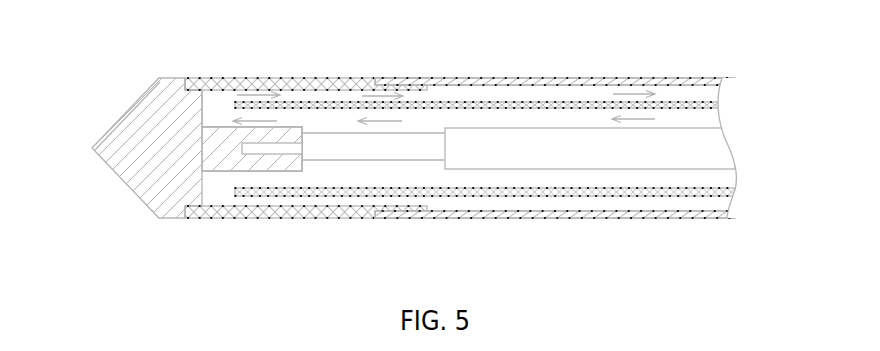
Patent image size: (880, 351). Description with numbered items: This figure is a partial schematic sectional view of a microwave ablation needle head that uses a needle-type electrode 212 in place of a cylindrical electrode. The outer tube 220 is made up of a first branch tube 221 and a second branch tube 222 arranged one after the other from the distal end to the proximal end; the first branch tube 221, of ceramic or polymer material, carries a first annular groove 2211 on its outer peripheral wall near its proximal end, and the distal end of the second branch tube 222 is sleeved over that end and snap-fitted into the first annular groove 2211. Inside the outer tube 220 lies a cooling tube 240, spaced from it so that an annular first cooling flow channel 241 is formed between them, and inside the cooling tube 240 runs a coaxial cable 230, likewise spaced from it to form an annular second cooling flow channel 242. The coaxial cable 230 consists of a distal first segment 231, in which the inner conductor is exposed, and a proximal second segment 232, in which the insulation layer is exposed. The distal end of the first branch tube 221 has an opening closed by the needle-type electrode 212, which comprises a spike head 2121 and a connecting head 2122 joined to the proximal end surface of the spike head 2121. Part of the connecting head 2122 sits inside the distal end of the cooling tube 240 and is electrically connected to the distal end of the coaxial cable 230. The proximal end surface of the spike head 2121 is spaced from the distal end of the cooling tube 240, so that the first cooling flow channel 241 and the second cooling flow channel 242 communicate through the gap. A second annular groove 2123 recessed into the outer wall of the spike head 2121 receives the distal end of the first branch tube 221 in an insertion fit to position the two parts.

The needle-type electrode 212 is at (182, 148).
The spike head 2121 is at (130, 114).
The connecting head 2122 is at (233, 157).
The second annular groove 2123 is at (192, 78).
The outer tube 220 is at (511, 141).
The first branch tube 221 is at (258, 78).
The first annular groove 2211 is at (392, 80).
The second branch tube 222 is at (628, 78).
The coaxial cable 230 is at (538, 180).
The first segment 231 is at (262, 148).
The second segment 232 is at (365, 147).
The cooling tube 240 is at (657, 205).
The first cooling flow channel 241 is at (478, 94).
The second cooling flow channel 242 is at (577, 118).